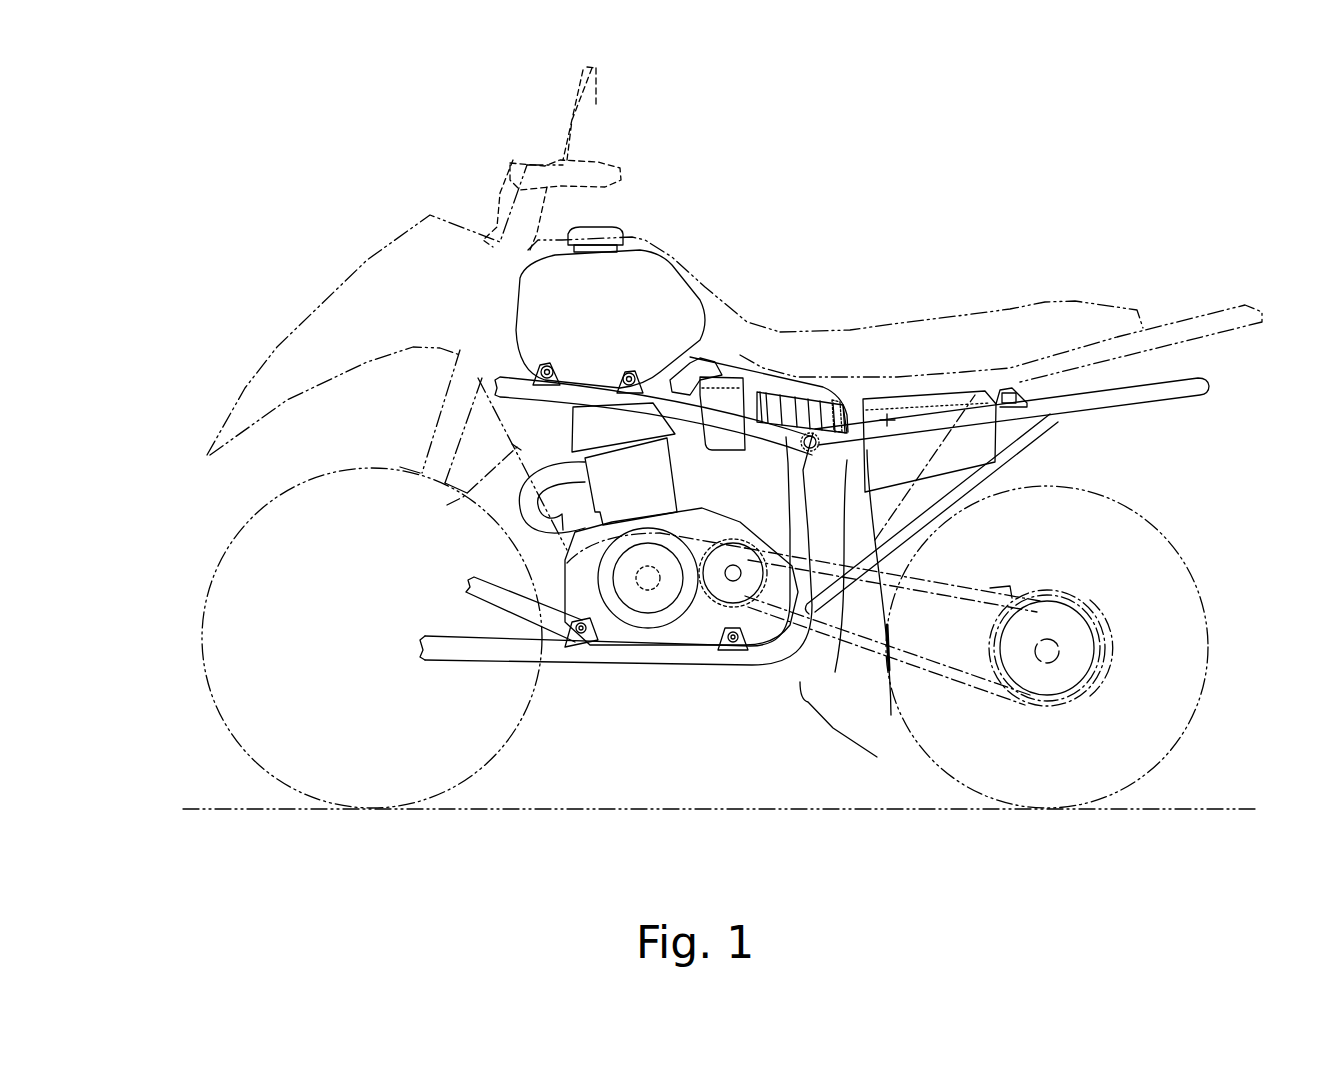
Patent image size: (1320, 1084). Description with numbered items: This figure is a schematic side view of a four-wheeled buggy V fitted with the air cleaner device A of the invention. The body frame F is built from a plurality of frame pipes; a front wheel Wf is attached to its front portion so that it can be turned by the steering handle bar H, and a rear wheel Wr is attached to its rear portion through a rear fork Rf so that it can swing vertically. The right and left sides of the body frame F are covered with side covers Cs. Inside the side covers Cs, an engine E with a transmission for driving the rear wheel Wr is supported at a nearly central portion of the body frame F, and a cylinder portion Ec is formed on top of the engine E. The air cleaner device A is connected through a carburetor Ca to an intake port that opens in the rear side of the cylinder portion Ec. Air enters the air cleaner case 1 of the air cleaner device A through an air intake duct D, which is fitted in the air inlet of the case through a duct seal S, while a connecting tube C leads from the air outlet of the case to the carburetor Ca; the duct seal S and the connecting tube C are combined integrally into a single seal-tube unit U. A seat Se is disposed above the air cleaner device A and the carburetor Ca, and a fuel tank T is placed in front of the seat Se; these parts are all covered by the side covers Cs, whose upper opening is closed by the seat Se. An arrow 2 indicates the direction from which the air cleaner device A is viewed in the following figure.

The steering handle bar H is at (608, 142).
The four-wheeled buggy V is at (842, 247).
The viewing direction of FIG. 2 is at (930, 240).
The seat Se is at (1066, 320).
The fuel tank T is at (616, 338).
The carburetor Ca is at (732, 392).
The air intake duct D is at (812, 386).
The air cleaner device A is at (967, 392).
The air cleaner case 1 is at (987, 447).
The side covers Cs is at (460, 480).
The cylinder portion Ec is at (643, 502).
The engine E is at (550, 571).
The body frame F is at (645, 660).
The rear fork Rf is at (1003, 585).
The connecting tube C is at (827, 583).
The seal-tube unit U is at (838, 719).
The duct seal S is at (892, 700).
The front wheel Wf is at (232, 737).
The rear wheel Wr is at (1197, 727).